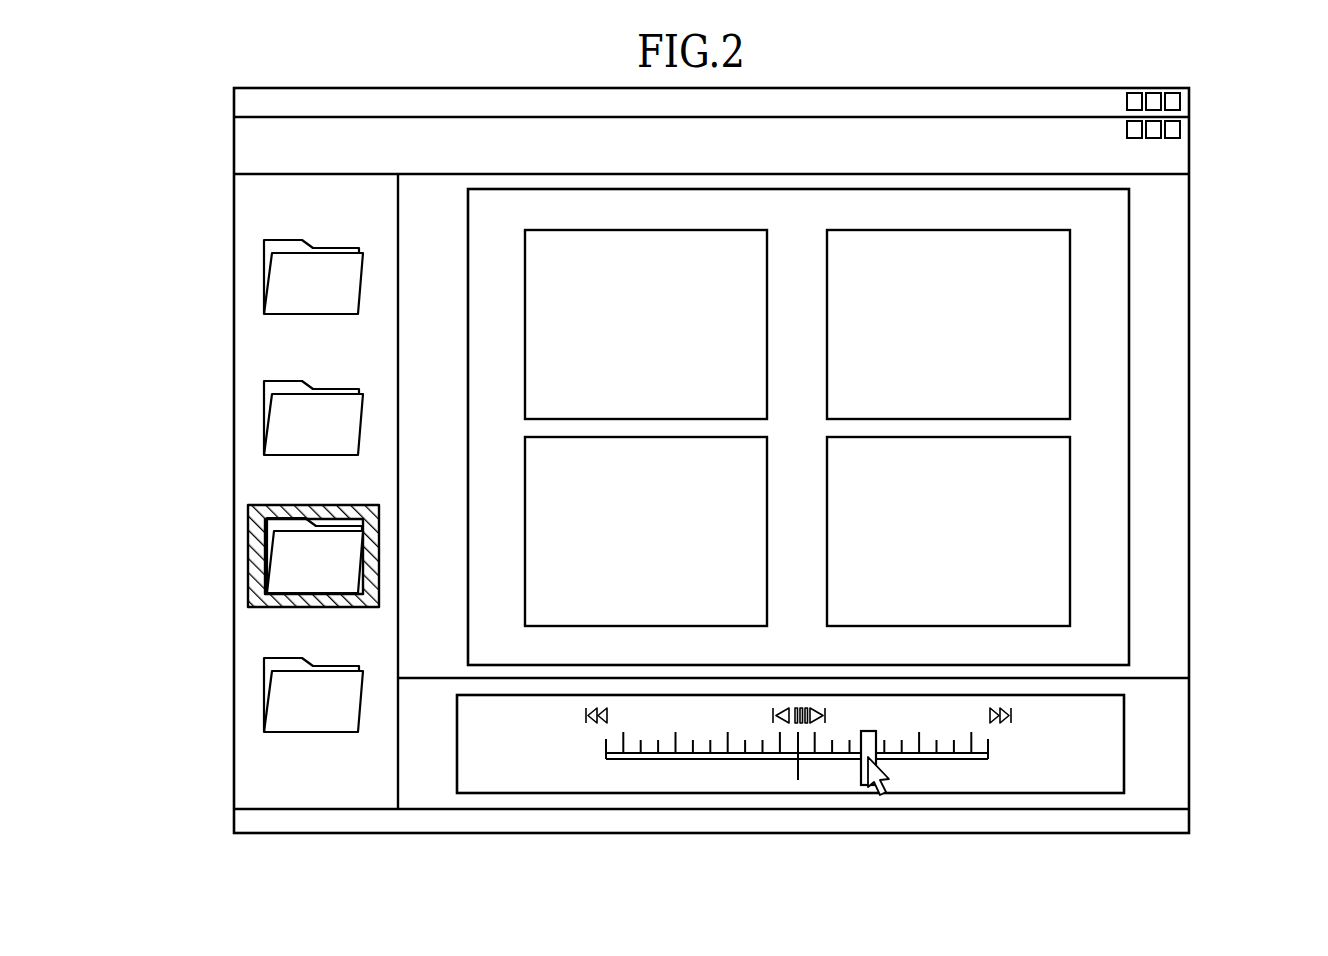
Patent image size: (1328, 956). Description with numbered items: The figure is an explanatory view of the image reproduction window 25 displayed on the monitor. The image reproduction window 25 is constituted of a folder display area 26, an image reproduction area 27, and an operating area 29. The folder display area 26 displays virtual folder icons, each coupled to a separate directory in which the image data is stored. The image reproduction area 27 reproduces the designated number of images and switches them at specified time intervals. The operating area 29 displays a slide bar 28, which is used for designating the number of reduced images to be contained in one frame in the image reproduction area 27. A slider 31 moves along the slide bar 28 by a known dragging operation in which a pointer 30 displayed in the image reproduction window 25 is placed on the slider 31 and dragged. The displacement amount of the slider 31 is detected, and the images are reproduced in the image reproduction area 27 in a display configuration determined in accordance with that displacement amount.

The image reproduction window 25 is at (1203, 243).
The folder display area 26 is at (248, 210).
The image reproduction area 27 is at (1129, 363).
The slide bar 28 is at (735, 757).
The operating area 29 is at (866, 794).
The pointer 30 is at (880, 797).
The slider 31 is at (862, 740).